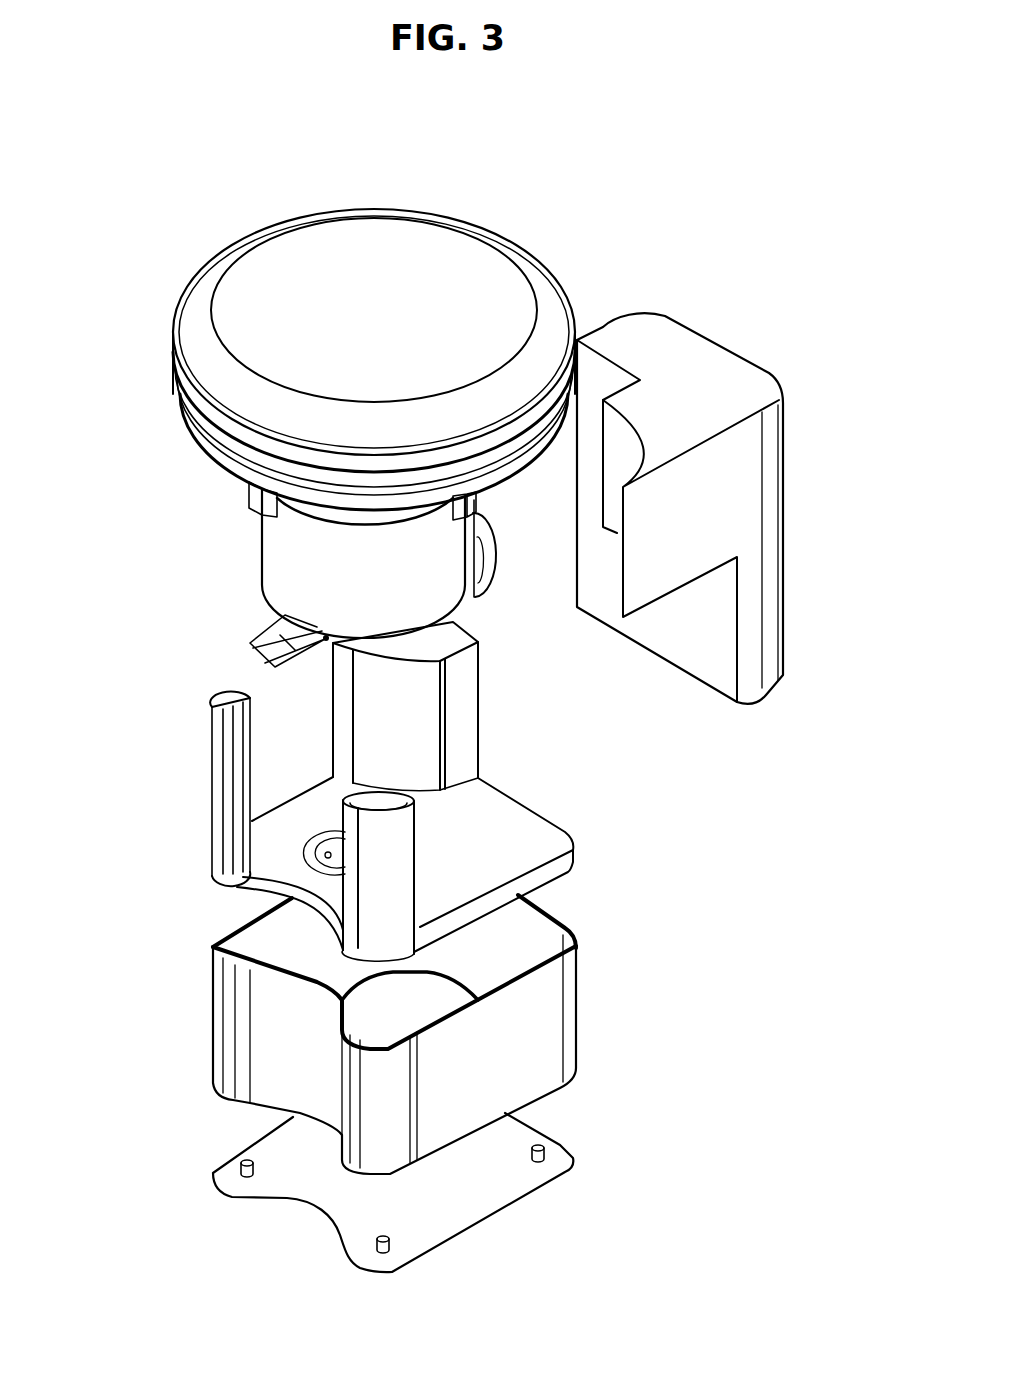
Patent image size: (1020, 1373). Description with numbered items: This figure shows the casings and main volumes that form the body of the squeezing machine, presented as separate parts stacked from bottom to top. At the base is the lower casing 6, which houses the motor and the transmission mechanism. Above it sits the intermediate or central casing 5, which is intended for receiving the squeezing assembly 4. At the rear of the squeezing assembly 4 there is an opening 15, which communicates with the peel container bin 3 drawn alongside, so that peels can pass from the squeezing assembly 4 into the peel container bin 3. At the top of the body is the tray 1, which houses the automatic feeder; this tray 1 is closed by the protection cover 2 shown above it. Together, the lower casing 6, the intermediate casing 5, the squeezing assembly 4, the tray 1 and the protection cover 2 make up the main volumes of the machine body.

The tray 1 is at (228, 464).
The protection cover 2 is at (235, 281).
The peel container bin 3 is at (638, 340).
The squeezing assembly 4 is at (285, 557).
The intermediate casing 5 is at (215, 768).
The lower casing 6 is at (568, 1012).
The opening 15 is at (493, 555).